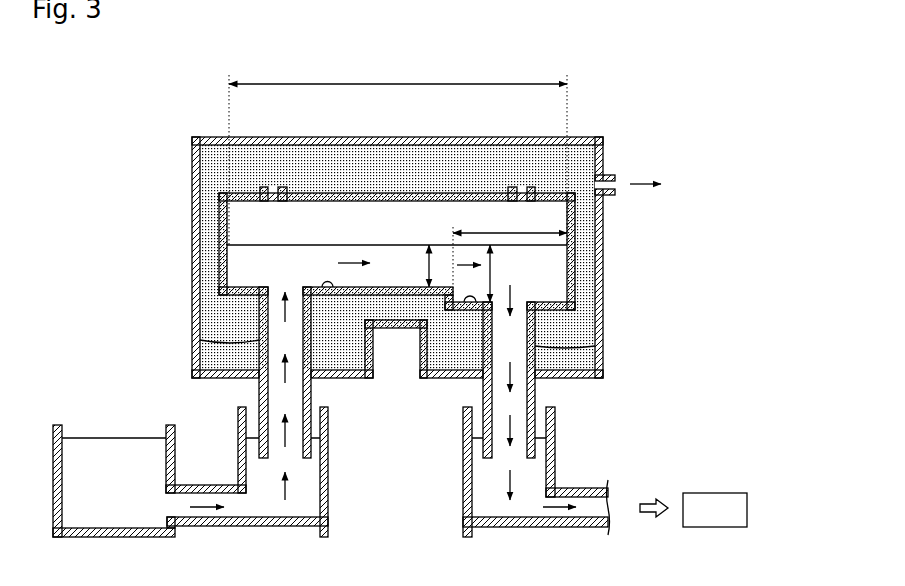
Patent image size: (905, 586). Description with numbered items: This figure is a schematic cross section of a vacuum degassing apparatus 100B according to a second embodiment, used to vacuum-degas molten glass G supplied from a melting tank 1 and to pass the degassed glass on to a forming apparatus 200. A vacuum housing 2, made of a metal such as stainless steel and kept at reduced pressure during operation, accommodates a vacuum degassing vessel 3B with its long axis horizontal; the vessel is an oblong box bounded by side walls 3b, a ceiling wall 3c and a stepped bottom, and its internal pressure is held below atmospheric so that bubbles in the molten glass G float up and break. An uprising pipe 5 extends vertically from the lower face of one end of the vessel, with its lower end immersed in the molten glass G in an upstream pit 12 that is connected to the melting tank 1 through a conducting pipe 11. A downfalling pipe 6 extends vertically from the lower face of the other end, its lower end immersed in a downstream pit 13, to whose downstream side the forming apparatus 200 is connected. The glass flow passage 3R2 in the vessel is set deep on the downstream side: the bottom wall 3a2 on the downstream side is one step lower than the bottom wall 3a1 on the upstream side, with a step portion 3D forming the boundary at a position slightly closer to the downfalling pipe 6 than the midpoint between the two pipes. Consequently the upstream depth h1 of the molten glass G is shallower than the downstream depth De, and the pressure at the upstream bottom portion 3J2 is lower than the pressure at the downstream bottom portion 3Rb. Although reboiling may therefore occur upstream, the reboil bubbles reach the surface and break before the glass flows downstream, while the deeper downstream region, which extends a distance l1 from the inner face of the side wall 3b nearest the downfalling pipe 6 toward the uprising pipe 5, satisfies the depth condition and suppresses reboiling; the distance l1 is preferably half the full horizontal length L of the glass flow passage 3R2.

The vacuum degassing apparatus 100B is at (406, 285).
The vacuum housing 2 is at (192, 163).
The vacuum degassing vessel 3B is at (219, 230).
The side wall 3b is at (219, 257).
The ceiling wall 3c is at (385, 193).
The glass flow passage 3R2 is at (318, 243).
The bottom portion of the glass flow passage on the downstream side 3Rb is at (492, 327).
The bottom wall 3a1 is at (392, 290).
The bottom wall 3a2 is at (445, 300).
The step portion 3D is at (418, 333).
The bottom portion of the glass flow passage on the upstream side 3J2 is at (332, 290).
The uprising pipe 5 is at (192, 340).
The downfalling pipe 6 is at (535, 345).
The melting tank 1 is at (190, 458).
The conducting pipe 11 is at (205, 485).
The upstream pit 12 is at (238, 410).
The downstream pit 13 is at (555, 418).
The forming apparatus 200 is at (714, 491).
The molten glass G is at (390, 260).
The full length of the glass flow passage L is at (398, 157).
The distance l1 is at (510, 258).
The depth h1 is at (417, 266).
The depth De is at (501, 273).